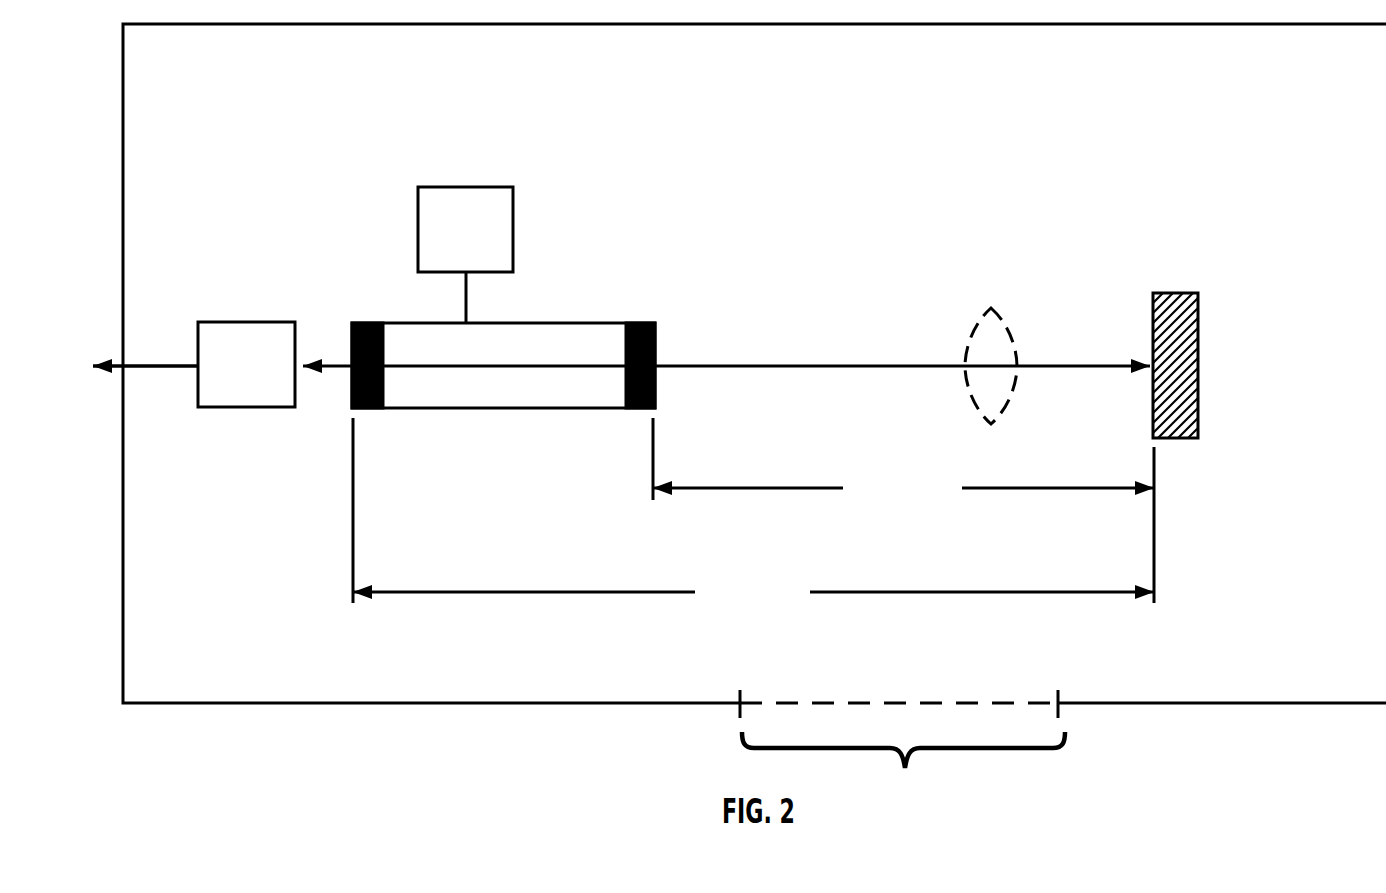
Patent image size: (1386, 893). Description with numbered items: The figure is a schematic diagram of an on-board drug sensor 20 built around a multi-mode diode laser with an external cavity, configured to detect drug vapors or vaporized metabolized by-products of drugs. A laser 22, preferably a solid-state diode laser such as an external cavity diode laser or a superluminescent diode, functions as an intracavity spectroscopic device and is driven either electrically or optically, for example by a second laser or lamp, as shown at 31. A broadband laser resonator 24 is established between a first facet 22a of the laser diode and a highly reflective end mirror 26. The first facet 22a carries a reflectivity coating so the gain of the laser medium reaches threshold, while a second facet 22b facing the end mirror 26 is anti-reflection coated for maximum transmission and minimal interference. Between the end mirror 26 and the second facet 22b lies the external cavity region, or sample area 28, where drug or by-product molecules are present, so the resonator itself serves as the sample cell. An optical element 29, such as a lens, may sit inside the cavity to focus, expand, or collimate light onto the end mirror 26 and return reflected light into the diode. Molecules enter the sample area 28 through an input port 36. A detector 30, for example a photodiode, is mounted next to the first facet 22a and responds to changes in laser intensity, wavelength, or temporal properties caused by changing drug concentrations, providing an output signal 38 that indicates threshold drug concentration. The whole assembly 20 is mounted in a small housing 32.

The sensor 20 is at (798, 253).
The laser 22 is at (527, 323).
The first facet 22a is at (362, 323).
The second facet 22b is at (637, 323).
The broadband laser resonator 24 is at (753, 515).
The end mirror 26 is at (1152, 316).
The sample area 28 is at (903, 476).
The optical element 29 is at (975, 330).
The detector 30 is at (232, 408).
The laser drive 31 is at (418, 203).
The housing 32 is at (612, 703).
The input port 36 is at (902, 750).
The output signal 38 is at (183, 363).